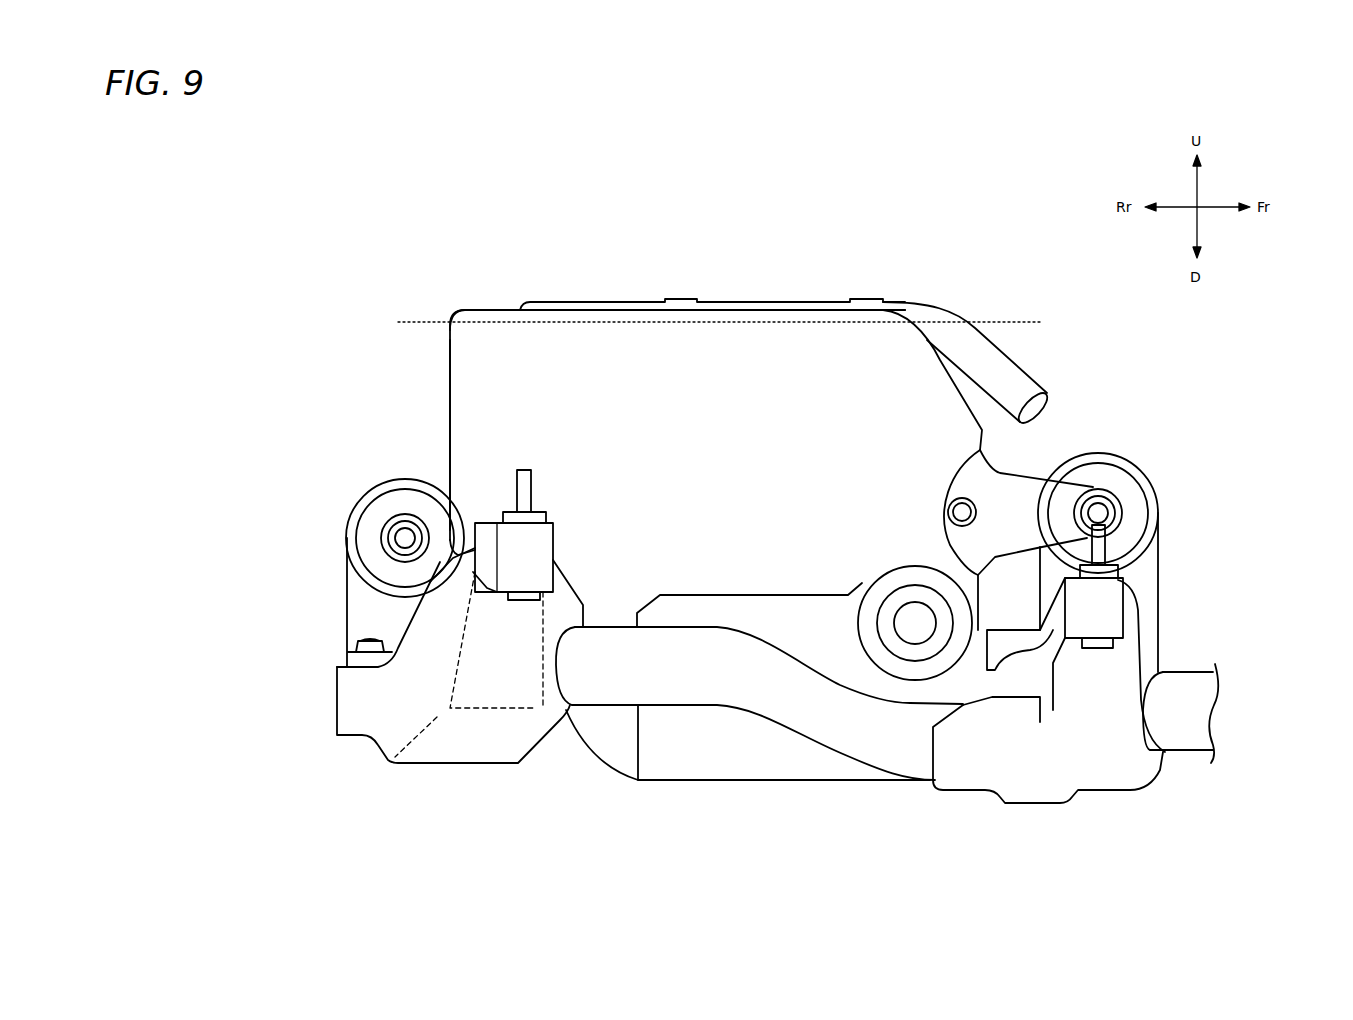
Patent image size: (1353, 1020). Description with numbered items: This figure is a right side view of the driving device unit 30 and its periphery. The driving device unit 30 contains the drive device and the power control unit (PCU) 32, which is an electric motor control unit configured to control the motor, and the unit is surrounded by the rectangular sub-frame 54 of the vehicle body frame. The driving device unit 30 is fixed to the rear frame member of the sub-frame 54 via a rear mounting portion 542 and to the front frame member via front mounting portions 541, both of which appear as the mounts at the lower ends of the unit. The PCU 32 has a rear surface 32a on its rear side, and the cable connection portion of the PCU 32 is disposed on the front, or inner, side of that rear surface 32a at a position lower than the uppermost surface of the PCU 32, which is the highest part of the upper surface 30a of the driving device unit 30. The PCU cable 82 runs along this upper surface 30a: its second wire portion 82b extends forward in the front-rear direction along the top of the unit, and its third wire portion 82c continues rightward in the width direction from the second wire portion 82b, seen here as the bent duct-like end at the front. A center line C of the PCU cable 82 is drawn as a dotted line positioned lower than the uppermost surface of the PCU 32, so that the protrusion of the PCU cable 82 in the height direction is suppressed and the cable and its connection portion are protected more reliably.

The driving device unit 30 is at (444, 297).
The power control unit (PCU) 32 is at (494, 306).
The rear surface 32a is at (447, 385).
The upper surface 30a is at (738, 302).
The second wire portion 82b is at (790, 302).
The PCU cable 82 is at (1015, 345).
The third wire portion 82c is at (1035, 373).
The front mounting portions 541 is at (347, 572).
The rear mounting portion 542 is at (1160, 568).
The sub-frame 54 is at (1228, 712).
The center line C is at (1005, 318).